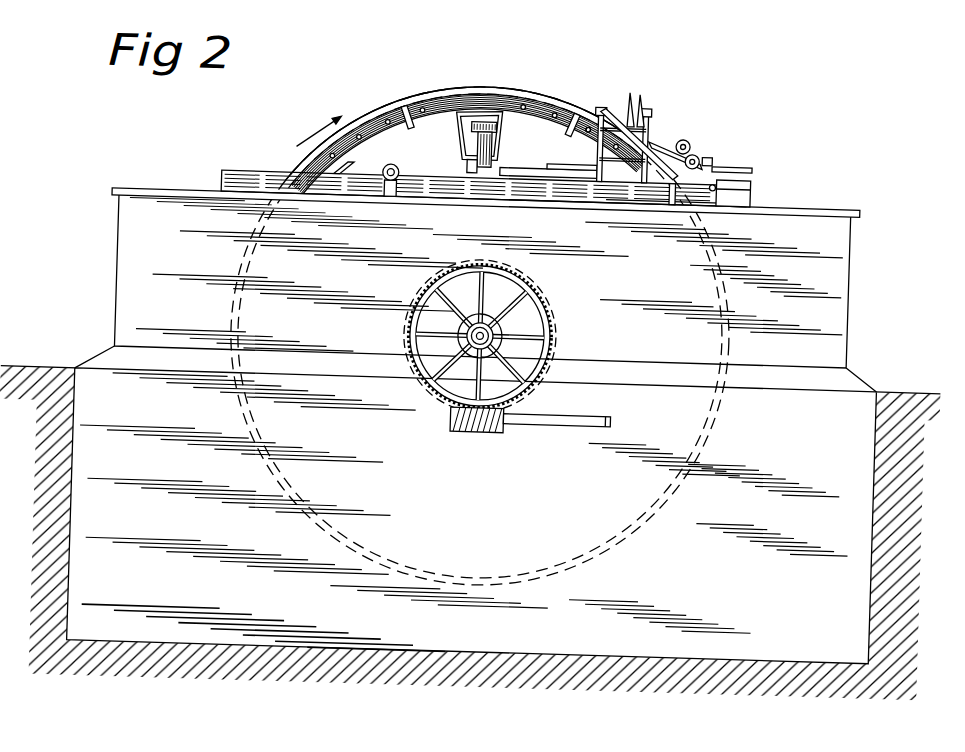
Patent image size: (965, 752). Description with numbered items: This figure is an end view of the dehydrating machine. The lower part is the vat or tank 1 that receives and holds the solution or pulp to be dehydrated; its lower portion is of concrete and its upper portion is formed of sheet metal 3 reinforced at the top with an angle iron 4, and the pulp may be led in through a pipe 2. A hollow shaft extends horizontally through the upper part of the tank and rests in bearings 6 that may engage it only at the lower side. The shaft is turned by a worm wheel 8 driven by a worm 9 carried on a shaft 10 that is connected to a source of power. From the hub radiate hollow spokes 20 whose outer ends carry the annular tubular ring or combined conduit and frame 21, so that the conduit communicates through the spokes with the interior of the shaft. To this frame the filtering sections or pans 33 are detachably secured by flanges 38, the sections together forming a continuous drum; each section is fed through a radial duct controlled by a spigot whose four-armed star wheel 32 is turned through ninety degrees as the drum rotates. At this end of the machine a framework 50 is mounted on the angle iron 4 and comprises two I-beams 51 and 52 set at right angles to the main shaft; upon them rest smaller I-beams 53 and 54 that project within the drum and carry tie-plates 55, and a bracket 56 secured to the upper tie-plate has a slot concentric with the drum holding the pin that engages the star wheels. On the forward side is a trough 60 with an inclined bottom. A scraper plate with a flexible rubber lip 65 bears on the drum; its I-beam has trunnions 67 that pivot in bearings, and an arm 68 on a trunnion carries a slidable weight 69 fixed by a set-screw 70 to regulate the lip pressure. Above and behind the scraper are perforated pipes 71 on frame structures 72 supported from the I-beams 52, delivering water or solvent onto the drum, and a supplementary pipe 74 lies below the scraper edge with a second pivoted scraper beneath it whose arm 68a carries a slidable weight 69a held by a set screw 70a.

The vat or tank 1 is at (470, 533).
The pipe 2 is at (379, 169).
The sheet metal 3 is at (478, 293).
The angle iron 4 is at (784, 201).
The bearings 6 is at (492, 373).
The worm wheel 8 is at (542, 316).
The worm 9 is at (469, 423).
The shaft 10 is at (569, 417).
The hollow spokes 20 is at (490, 164).
The annular tubular ring or combined conduit and frame 21 is at (359, 138).
The star wheel 32 is at (544, 101).
The filtering section or pan 33 is at (471, 90).
The flanges 38 is at (524, 98).
The framework 50 is at (546, 166).
The I-beam 51 is at (649, 192).
The I-beam 52 is at (733, 184).
The smaller I-beam 53 is at (456, 170).
The smaller I-beam 54 is at (647, 192).
The tie-plates 55 is at (545, 166).
The bracket 56 is at (447, 129).
The trough 60 is at (710, 159).
The flexible lip 65 is at (640, 150).
The cylindrical trunnions 67 is at (646, 147).
The arm 68 is at (684, 139).
The arm 68a is at (712, 170).
The slidable weight 69 is at (690, 146).
The slidable weight 69a is at (706, 184).
The set-screw 70 is at (677, 136).
The set screw 70a is at (715, 153).
The pipes 71 is at (630, 118).
The frame structures 72 is at (563, 122).
The supplementary pipe 74 is at (666, 189).